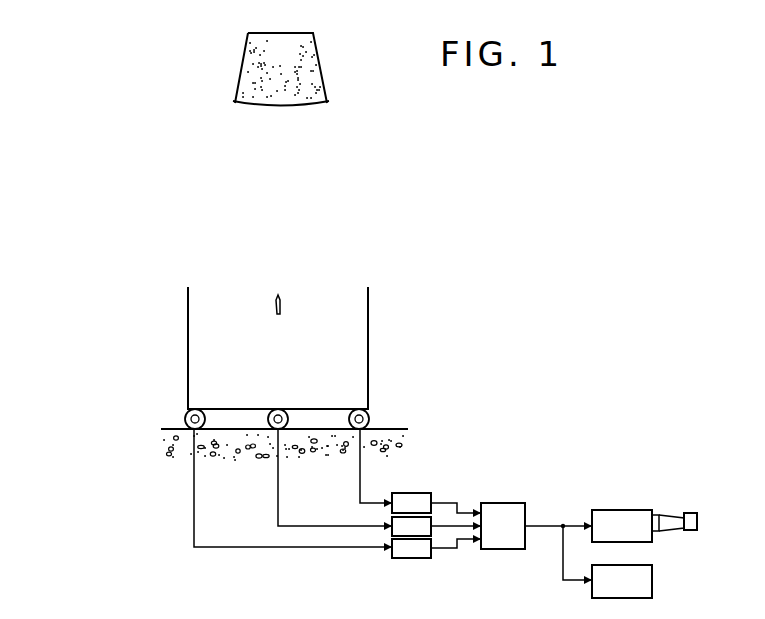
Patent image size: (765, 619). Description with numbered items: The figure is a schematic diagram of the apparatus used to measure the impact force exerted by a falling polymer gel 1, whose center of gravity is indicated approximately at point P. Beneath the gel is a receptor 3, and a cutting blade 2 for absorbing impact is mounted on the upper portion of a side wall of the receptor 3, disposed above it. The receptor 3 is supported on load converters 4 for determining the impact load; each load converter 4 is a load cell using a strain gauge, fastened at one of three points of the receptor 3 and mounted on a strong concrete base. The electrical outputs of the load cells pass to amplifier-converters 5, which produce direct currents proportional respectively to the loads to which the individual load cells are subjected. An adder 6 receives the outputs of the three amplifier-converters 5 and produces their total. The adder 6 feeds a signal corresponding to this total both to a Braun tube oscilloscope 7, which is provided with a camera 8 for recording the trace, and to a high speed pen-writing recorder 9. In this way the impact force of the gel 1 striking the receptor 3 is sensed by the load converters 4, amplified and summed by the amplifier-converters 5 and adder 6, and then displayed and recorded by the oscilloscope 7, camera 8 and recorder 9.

The polymer gel 1 is at (262, 69).
The cutting blade 2 is at (277, 298).
The receptor 3 is at (188, 352).
The load converters 4 is at (188, 420).
The amplifier-converters 5 is at (411, 558).
The adder 6 is at (503, 503).
The Braun tube oscilloscope 7 is at (614, 510).
The camera 8 is at (692, 513).
The high speed pen-writing recorder 9 is at (652, 585).